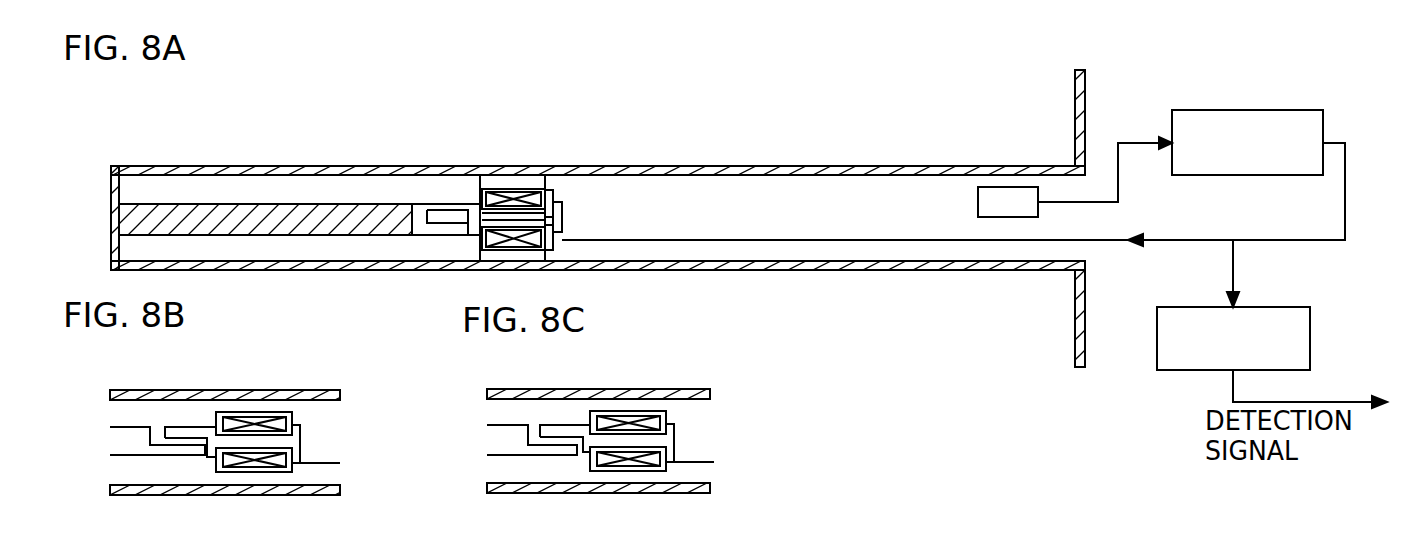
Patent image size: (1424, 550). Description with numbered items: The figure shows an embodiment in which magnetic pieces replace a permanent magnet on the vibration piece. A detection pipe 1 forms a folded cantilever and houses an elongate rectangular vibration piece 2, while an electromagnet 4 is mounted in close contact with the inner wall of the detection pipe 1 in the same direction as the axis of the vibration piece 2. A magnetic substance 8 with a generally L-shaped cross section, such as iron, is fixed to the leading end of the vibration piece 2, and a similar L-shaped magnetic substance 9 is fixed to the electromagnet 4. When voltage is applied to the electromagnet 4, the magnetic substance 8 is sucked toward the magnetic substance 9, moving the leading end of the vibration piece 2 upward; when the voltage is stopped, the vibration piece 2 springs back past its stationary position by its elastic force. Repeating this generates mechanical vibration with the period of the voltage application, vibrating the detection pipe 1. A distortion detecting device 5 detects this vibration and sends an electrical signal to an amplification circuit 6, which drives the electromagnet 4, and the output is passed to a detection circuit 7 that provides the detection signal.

In FIG. 8A, the detection pipe 1 is at (222, 166).
In FIG. 8A, the vibration piece 2 is at (258, 204).
In FIG. 8A, the electromagnet 4 is at (515, 189).
In FIG. 8B, the electromagnet 4 is at (267, 413).
In FIG. 8C, the electromagnet 4 is at (643, 410).
In FIG. 8A, the distortion detecting device 5 is at (999, 187).
In FIG. 8A, the amplification circuit 6 is at (1252, 110).
In FIG. 8A, the detection circuit 7 is at (1272, 307).
In FIG. 8A, the magnetic substance 8 is at (440, 236).
In FIG. 8B, the magnetic substance 8 is at (177, 455).
In FIG. 8C, the magnetic substance 8 is at (543, 457).
In FIG. 8A, the magnetic substance 9 is at (443, 205).
In FIG. 8B, the magnetic substance 9 is at (180, 427).
In FIG. 8C, the magnetic substance 9 is at (565, 425).